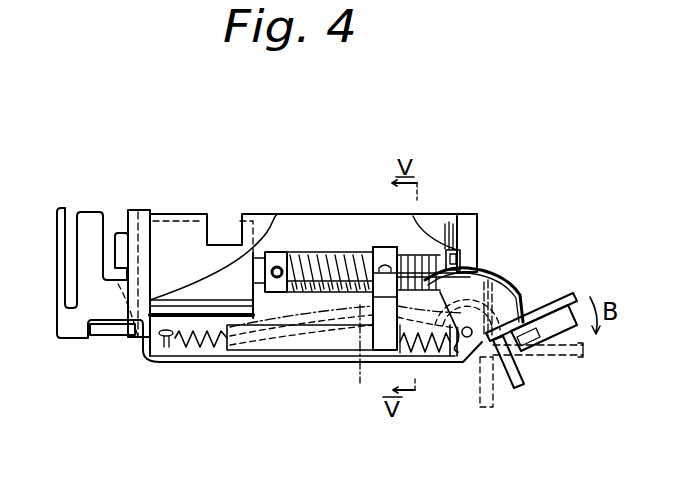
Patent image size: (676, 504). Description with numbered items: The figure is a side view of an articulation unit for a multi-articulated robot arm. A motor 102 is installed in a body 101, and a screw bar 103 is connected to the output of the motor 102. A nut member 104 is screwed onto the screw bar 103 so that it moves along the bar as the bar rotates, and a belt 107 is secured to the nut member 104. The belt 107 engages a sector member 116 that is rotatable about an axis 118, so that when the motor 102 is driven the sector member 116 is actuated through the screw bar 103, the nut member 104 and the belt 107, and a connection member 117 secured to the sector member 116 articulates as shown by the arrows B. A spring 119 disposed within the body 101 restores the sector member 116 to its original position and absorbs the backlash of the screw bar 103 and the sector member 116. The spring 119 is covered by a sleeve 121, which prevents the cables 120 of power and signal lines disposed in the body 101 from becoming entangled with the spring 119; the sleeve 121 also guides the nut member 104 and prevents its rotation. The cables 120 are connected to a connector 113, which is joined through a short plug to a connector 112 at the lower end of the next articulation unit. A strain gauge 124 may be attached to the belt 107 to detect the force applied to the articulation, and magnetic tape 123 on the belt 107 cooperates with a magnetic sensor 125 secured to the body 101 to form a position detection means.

The body 101 is at (255, 364).
The motor 102 is at (180, 245).
The screw bar 103 is at (313, 255).
The nut member 104 is at (380, 250).
The belt 107 is at (480, 287).
The connector 112 is at (120, 218).
The connector 113 is at (567, 342).
The sector member 116 is at (497, 297).
The connection member 117 is at (567, 297).
The axis 118 is at (462, 355).
The spring 119 is at (433, 360).
The cables 120 is at (360, 385).
The sleeve 121 is at (313, 365).
The magnetic tape 123 is at (503, 283).
The strain gauge 124 is at (421, 345).
The magnetic sensor 125 is at (459, 245).